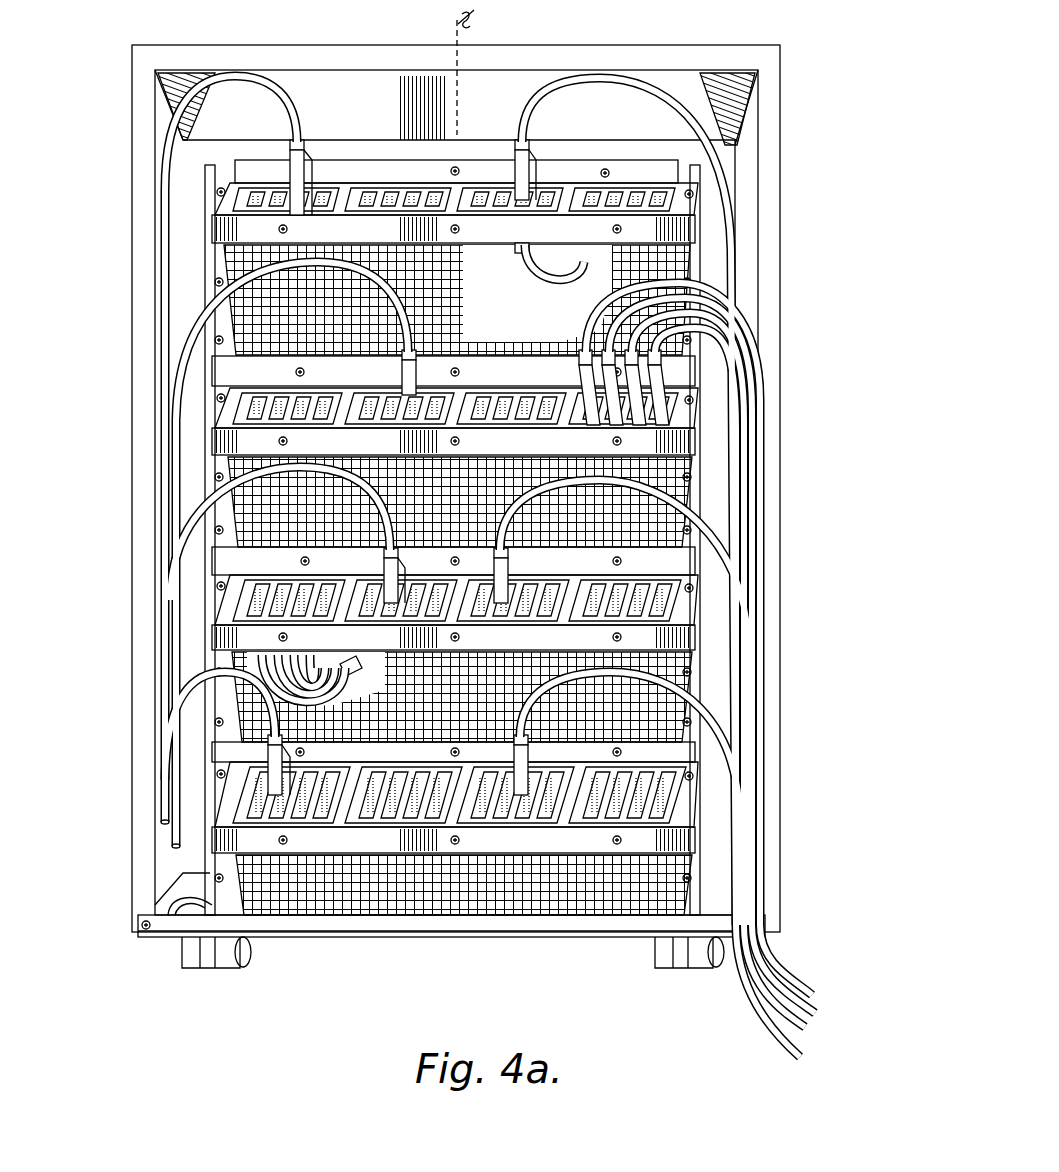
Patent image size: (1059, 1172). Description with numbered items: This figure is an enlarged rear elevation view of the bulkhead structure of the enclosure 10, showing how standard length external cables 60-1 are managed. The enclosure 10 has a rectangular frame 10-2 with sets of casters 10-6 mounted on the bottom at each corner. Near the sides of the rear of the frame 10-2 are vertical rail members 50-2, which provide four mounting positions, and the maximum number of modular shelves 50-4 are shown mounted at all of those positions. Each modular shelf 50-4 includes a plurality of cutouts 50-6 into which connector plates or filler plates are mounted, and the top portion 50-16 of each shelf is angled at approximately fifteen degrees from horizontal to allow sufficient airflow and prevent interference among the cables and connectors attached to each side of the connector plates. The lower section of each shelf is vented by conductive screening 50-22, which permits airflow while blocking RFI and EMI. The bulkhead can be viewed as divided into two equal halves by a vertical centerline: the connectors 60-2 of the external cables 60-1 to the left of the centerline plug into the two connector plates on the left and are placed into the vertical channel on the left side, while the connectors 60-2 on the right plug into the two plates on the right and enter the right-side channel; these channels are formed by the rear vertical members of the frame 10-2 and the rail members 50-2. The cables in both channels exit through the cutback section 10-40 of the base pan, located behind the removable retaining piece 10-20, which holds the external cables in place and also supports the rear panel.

The enclosure 10 is at (122, 208).
The frame 10-2 is at (782, 108).
The casters 10-6 is at (218, 967).
The retaining piece 10-20 is at (452, 937).
The cutback section 10-40 is at (165, 906).
The rail member 50-2 is at (183, 278).
The modular shelf 50-4 is at (680, 232).
The cutouts 50-6 is at (660, 198).
The top portion of modular shelf 50-16 is at (606, 170).
The mesh panel 50-22 is at (428, 300).
The external cables 60-1 is at (296, 106).
The connectors 60-2 is at (306, 150).